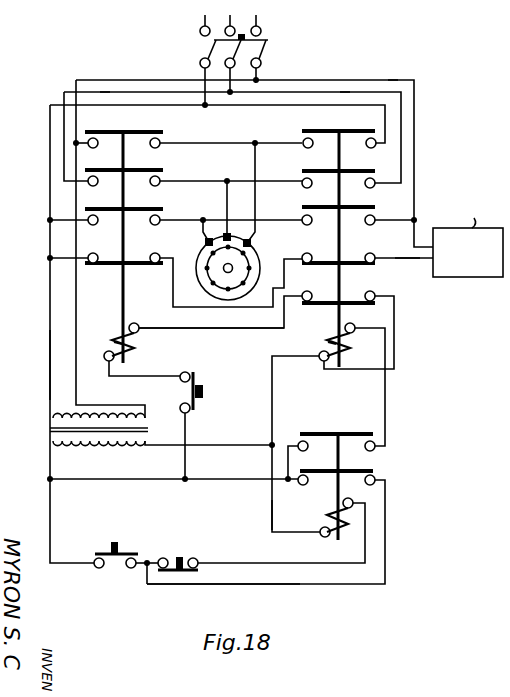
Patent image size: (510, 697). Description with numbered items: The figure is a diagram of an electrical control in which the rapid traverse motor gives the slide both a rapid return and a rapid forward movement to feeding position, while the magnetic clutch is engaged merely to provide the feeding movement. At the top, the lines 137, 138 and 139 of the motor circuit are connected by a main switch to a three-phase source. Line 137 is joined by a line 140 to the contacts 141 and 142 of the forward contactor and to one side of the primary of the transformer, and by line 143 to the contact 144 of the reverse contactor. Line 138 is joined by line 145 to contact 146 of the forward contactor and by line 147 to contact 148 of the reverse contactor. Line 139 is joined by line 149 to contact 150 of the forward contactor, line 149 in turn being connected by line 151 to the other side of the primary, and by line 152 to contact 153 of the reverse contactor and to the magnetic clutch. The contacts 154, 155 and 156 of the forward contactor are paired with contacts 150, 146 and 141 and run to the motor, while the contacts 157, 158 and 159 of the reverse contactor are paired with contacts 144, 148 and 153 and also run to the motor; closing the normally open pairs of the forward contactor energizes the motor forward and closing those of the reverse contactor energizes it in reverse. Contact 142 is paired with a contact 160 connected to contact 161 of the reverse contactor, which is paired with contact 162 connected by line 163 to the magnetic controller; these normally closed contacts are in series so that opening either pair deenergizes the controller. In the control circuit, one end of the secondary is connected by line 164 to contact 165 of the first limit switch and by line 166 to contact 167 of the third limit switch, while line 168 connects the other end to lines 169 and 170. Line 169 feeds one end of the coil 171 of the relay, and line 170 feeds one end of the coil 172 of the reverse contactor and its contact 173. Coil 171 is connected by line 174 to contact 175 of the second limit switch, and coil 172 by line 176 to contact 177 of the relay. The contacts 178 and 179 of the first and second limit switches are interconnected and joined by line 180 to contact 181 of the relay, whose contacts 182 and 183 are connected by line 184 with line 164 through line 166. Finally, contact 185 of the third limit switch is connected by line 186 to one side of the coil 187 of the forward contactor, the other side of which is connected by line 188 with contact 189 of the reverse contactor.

The line 137 is at (203, 70).
The line 138 is at (240, 55).
The line 139 is at (262, 68).
The line 140 is at (50, 105).
The contact 141 is at (97, 224).
The contact 142 is at (98, 257).
The line 143 is at (302, 92).
The contact 144 is at (376, 143).
The line 145 is at (103, 92).
The contact 146 is at (98, 181).
The line 147 is at (340, 92).
The contact 148 is at (375, 183).
The line 149 is at (140, 80).
The contact 150 is at (98, 143).
The line 151 is at (50, 362).
The line 152 is at (392, 80).
The contact 153 is at (375, 220).
The contact 154 is at (155, 148).
The contact 155 is at (160, 190).
The contact 156 is at (155, 225).
The contact 157 is at (313, 143).
The contact 158 is at (312, 183).
The contact 159 is at (312, 220).
The contact 160 is at (150, 257).
The contact 161 is at (316, 252).
The contact 162 is at (372, 263).
The line 163 is at (400, 258).
The line 164 is at (50, 536).
The contact 165 is at (96, 568).
The line 166 is at (187, 430).
The contact 167 is at (180, 410).
The line 168 is at (244, 445).
The line 169 is at (272, 520).
The line 170 is at (276, 394).
The coil 171 is at (352, 518).
The coil 172 is at (328, 343).
The contact 173 is at (365, 290).
The line 174 is at (322, 564).
The contact 175 is at (197, 560).
The line 176 is at (385, 324).
The contact 177 is at (375, 448).
The contact 178 is at (130, 568).
The contact 179 is at (160, 568).
The line 180 is at (352, 586).
The contact 181 is at (375, 478).
The contact 182 is at (308, 446).
The contact 183 is at (300, 484).
The line 184 is at (233, 467).
The contact 185 is at (184, 372).
The line 186 is at (176, 376).
The coil 187 is at (114, 344).
The line 188 is at (240, 329).
The contact 189 is at (312, 296).